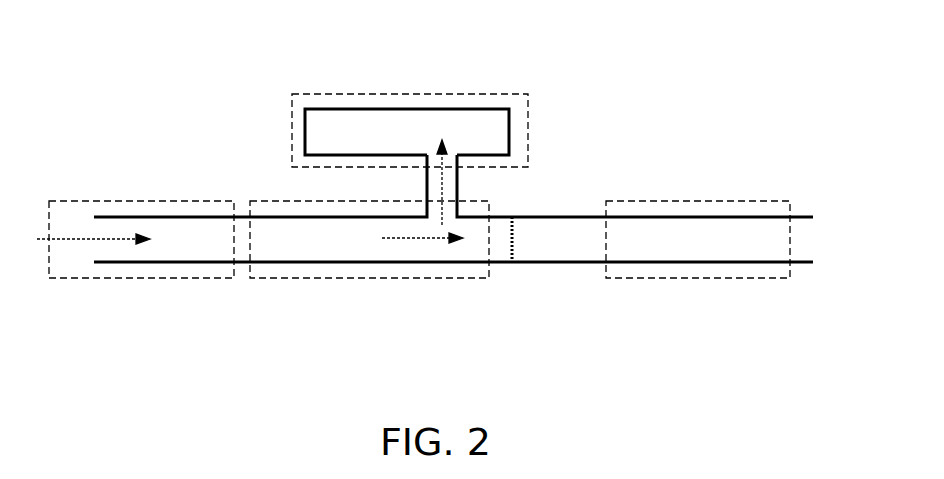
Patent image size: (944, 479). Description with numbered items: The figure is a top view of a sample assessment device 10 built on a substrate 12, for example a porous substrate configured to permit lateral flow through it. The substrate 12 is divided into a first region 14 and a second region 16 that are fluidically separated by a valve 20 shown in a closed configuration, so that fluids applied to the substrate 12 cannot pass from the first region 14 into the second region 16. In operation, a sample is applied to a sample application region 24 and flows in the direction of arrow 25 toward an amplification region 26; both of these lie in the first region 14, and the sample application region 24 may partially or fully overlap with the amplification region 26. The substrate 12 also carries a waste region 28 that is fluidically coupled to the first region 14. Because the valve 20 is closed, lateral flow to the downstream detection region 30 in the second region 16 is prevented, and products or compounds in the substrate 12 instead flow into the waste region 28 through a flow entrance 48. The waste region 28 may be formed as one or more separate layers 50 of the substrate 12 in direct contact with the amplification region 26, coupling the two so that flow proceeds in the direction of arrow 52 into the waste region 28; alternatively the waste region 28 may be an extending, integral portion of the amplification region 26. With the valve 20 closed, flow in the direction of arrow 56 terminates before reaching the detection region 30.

The sample assessment device 10 is at (636, 68).
The substrate 12 is at (113, 216).
The first region 14 is at (241, 338).
The second region 16 is at (643, 332).
The valve 20 is at (512, 275).
The sample application region 24 is at (133, 280).
The arrow 25 is at (72, 242).
The amplification region 26 is at (305, 280).
The waste region 28 is at (352, 94).
The detection region 30 is at (696, 280).
The flow entrance 48 is at (453, 184).
The separate layers 50 is at (432, 109).
The arrow 52 is at (460, 208).
The arrow 56 is at (424, 242).